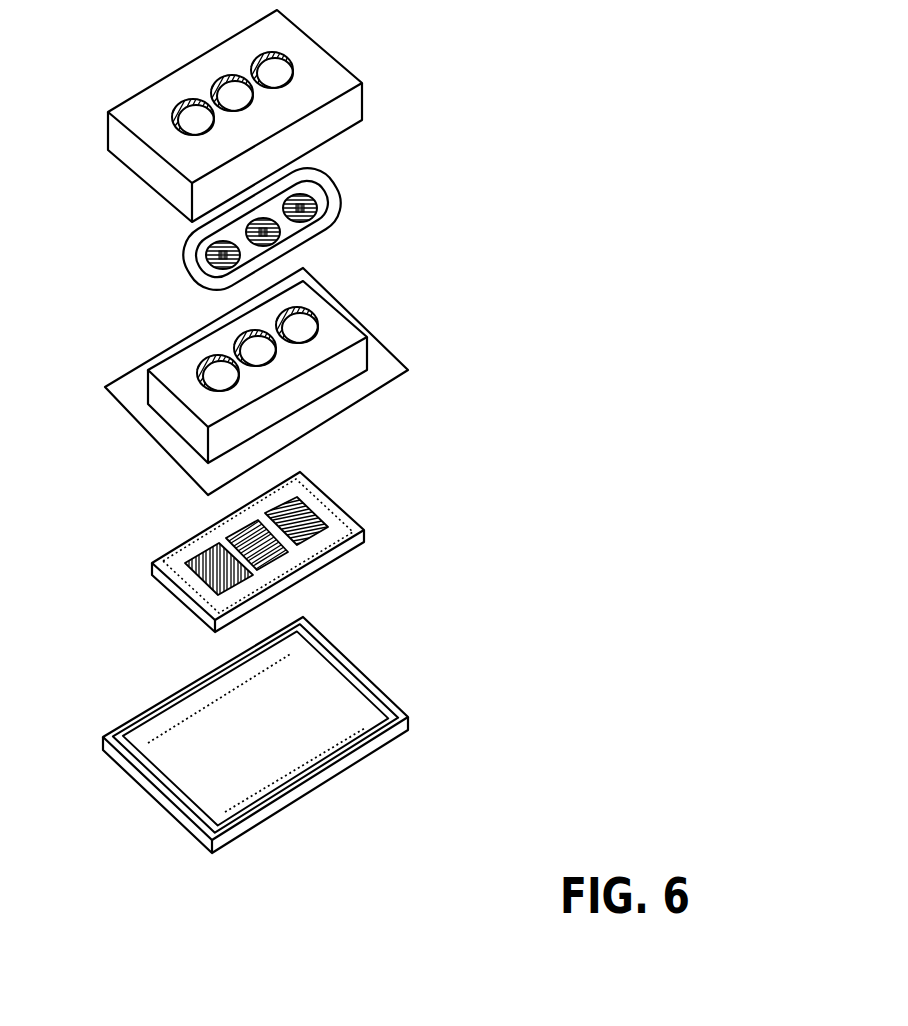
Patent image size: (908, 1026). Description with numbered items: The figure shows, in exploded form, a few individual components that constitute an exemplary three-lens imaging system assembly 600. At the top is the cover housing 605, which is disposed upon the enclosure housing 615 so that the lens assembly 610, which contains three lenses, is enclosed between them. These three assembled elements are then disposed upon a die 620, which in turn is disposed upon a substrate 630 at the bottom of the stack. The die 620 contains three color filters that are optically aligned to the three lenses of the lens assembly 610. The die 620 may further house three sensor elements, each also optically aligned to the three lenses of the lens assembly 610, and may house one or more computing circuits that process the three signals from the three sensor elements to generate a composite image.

The three-lens imaging system assembly 600 is at (774, 93).
The cover housing 605 is at (138, 92).
The lens assembly 610 is at (183, 247).
The enclosure housing 615 is at (137, 367).
The die 620 is at (183, 540).
The substrate 630 is at (152, 710).